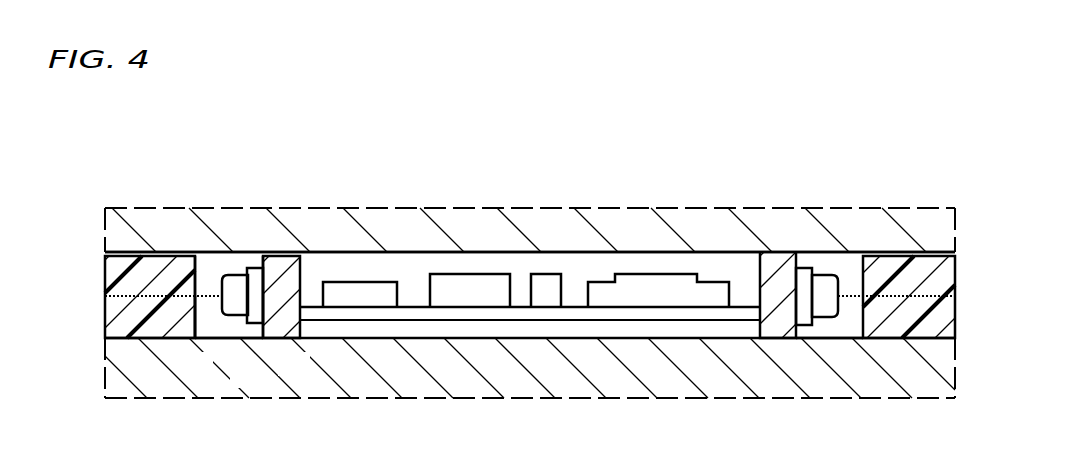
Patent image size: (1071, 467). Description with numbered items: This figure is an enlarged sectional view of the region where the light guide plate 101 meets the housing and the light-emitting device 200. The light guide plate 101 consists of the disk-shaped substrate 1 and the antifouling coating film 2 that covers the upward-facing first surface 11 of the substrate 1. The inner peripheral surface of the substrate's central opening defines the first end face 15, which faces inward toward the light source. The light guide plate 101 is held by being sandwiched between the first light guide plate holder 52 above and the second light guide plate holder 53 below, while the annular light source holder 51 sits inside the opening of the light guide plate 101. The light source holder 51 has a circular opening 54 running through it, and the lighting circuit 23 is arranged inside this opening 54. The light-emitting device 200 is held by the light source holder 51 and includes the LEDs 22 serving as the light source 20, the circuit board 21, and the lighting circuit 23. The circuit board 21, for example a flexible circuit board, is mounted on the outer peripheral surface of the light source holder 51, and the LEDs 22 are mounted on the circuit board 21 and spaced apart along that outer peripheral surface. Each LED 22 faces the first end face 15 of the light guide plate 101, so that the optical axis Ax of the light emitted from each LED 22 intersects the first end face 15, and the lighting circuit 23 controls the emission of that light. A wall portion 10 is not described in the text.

The substrate 1 is at (126, 256).
The antifouling coating film 2 is at (123, 253).
The wall portion 10 is at (163, 278).
The light guide plate 101 is at (129, 256).
The first surface 11 is at (230, 327).
The first end face 15 is at (197, 323).
The light source 20 is at (197, 228).
The circuit board 21 is at (256, 273).
The LEDs 22 is at (233, 283).
The lighting circuit 23 is at (345, 224).
The light source holder 51 is at (283, 323).
The first light guide plate holder 52 is at (533, 227).
The second light guide plate holder 53 is at (558, 375).
The opening 54 is at (408, 273).
The light-emitting device 200 is at (270, 211).
The optical axis Ax is at (116, 298).